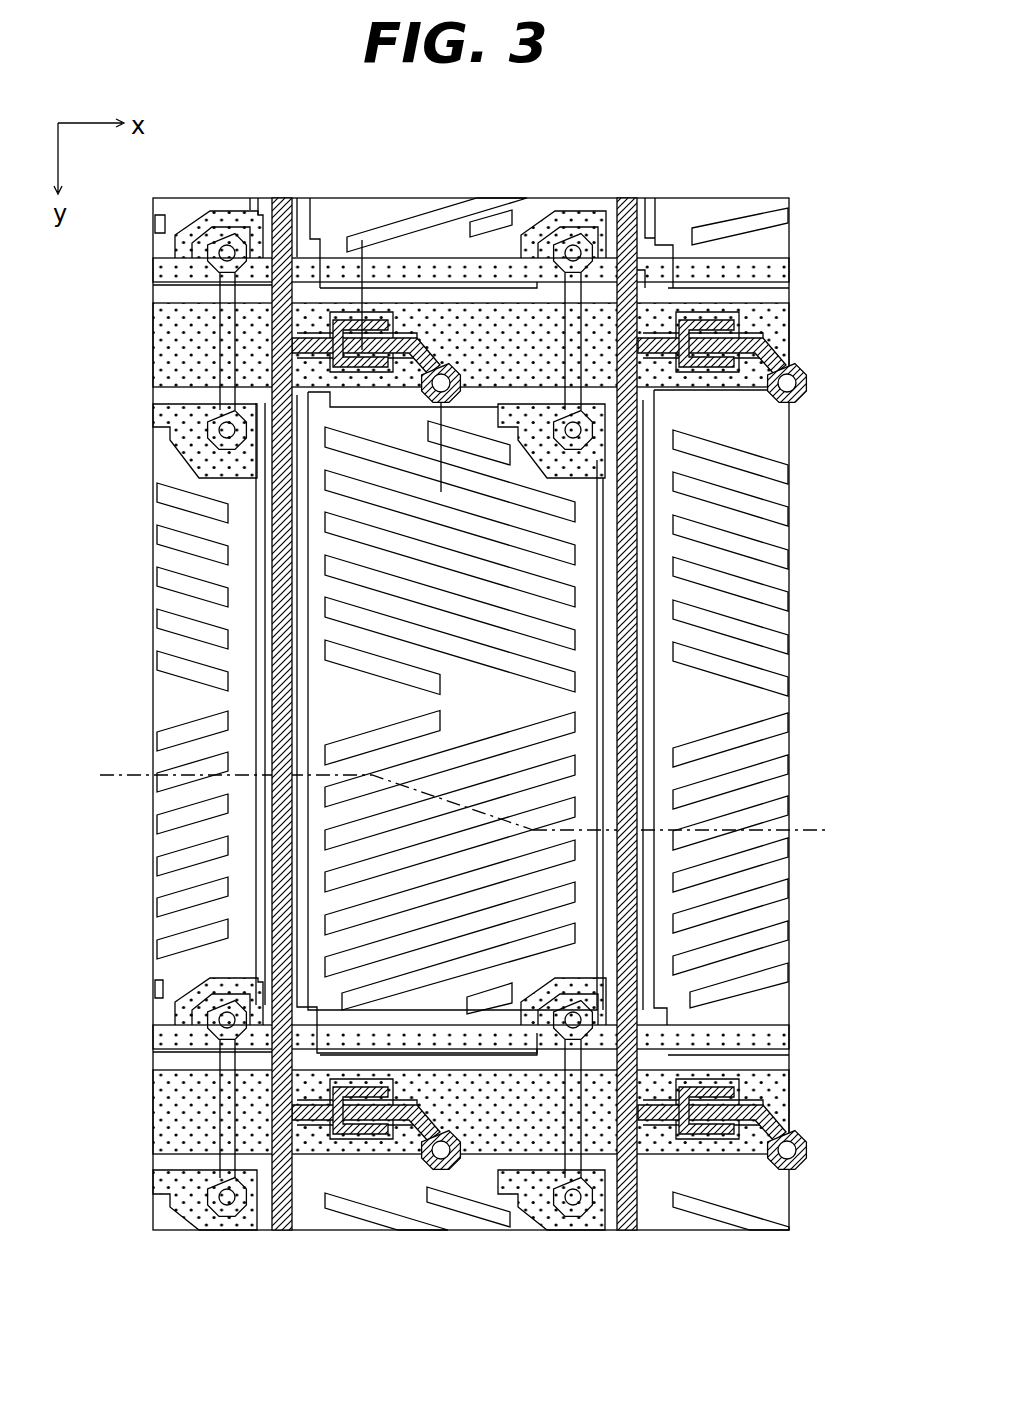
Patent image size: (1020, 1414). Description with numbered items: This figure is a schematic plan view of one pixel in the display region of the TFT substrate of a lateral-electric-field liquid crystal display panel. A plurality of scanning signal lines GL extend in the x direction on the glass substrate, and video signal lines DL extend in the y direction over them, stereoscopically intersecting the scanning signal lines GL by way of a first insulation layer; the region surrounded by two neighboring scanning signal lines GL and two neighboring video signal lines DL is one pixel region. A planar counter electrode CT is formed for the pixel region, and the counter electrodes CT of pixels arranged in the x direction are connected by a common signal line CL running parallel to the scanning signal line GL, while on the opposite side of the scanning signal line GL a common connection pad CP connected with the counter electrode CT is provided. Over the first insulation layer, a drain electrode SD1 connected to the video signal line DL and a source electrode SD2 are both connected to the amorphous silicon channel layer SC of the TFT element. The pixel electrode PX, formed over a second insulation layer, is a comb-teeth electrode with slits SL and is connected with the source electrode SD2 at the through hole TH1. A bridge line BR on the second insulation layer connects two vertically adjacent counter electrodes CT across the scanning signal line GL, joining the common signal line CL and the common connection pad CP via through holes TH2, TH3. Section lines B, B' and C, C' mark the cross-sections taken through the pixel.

The drain electrode SD1 is at (348, 322).
The source electrode SD2 is at (372, 1117).
The through hole TH1 is at (440, 1160).
The through hole TH2 is at (573, 250).
The through hole TH3 is at (593, 435).
The bridge line BR is at (640, 278).
The common signal line CL is at (790, 272).
The scanning signal line GL is at (775, 328).
The common connection pad CP is at (597, 452).
The slit SL is at (362, 541).
The pixel electrode PX is at (606, 635).
The counter electrode CT is at (613, 720).
The video signal line DL is at (280, 860).
The channel layer SC is at (357, 1137).
The section line B is at (364, 276).
The section line B' is at (453, 462).
The section line C is at (300, 793).
The section line C' is at (701, 830).